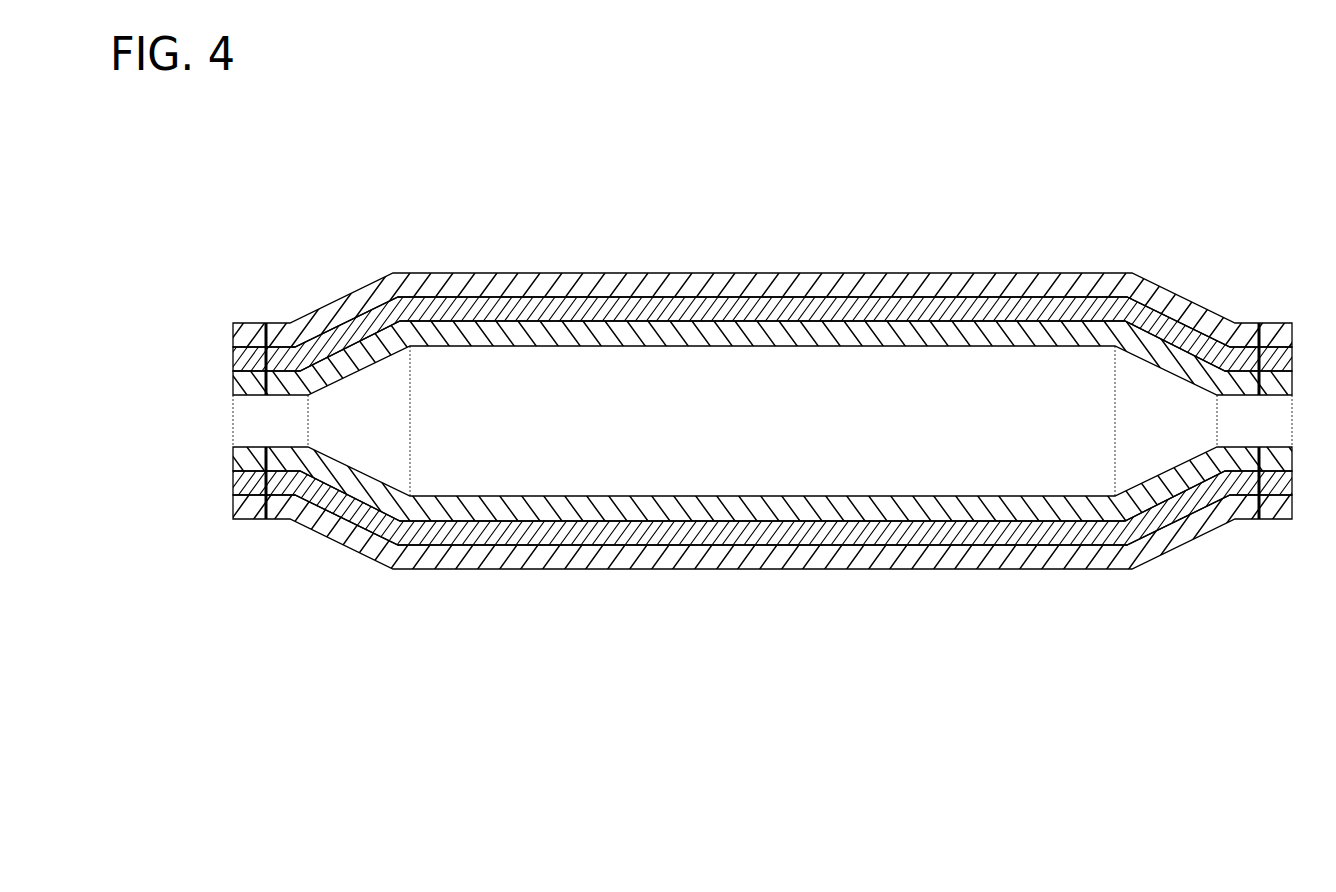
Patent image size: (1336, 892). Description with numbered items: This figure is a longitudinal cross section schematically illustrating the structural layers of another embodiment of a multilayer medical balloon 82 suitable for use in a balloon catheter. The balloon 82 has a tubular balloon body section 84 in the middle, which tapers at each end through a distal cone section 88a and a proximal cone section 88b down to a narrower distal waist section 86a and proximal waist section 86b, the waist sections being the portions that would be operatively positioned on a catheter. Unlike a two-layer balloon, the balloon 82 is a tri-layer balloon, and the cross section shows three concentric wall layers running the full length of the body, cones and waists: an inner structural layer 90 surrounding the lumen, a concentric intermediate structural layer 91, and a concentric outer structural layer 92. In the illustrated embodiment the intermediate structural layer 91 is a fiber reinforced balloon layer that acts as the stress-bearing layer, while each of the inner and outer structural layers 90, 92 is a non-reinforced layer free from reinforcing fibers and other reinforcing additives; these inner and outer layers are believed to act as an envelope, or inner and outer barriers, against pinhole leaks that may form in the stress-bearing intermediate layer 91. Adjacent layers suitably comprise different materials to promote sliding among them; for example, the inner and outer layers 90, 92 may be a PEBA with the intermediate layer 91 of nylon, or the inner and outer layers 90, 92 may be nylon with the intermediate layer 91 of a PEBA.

The multilayer medical balloon 82 is at (333, 706).
The tubular balloon body section 84 is at (852, 272).
The distal waist section 86a is at (1273, 520).
The proximal waist section 86b is at (275, 321).
The distal cone section 88a is at (1177, 297).
The proximal cone section 88b is at (337, 541).
The inner structural layer 90 is at (870, 506).
The intermediate structural layer 91 is at (558, 308).
The outer structural layer 92 is at (717, 572).